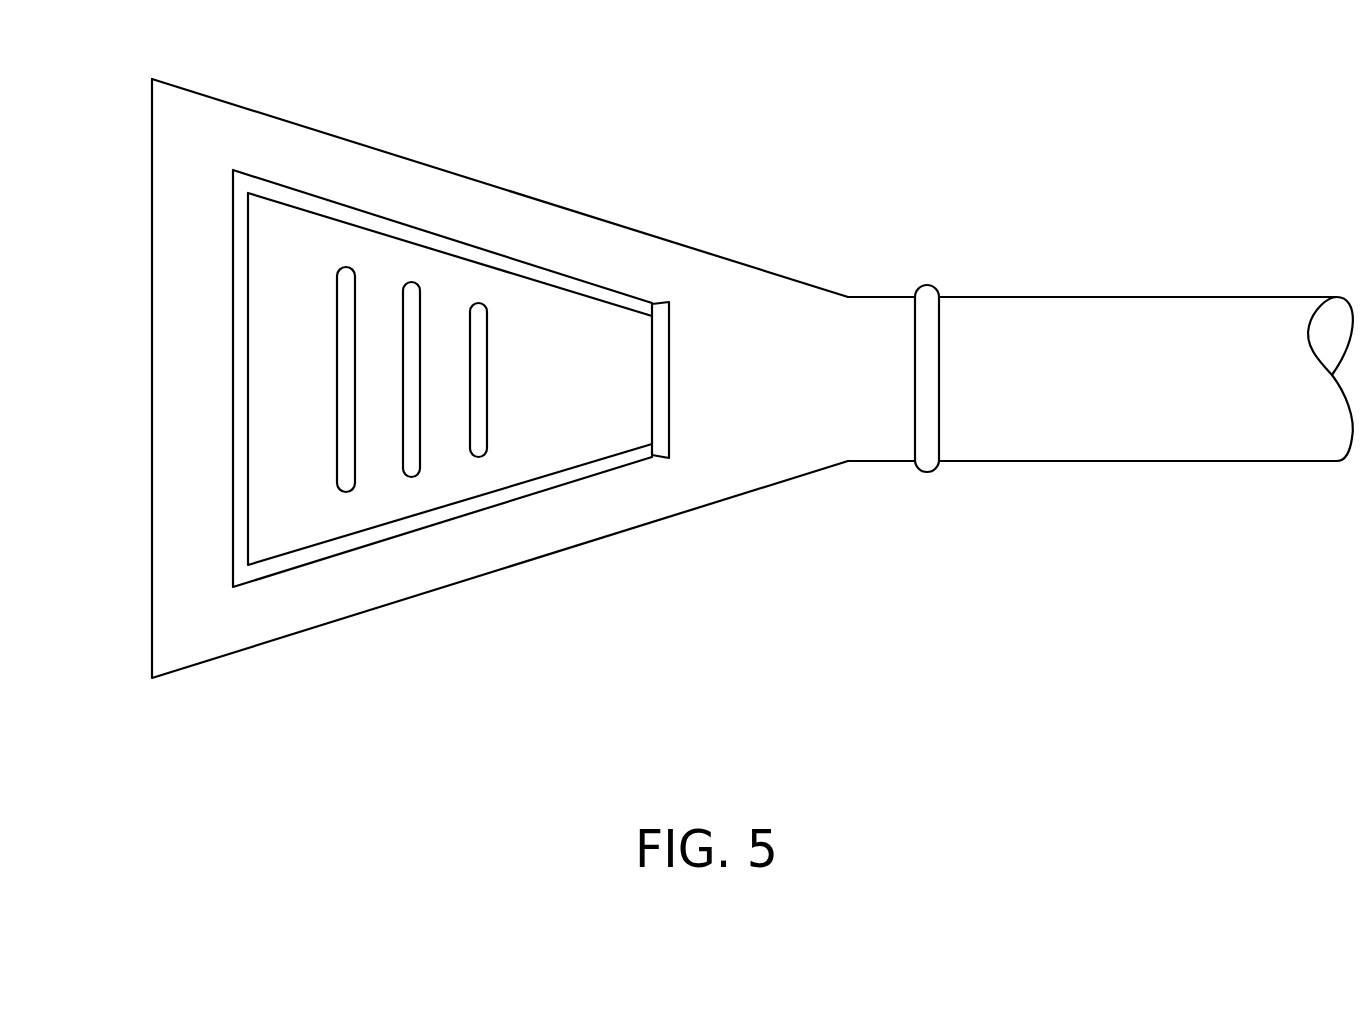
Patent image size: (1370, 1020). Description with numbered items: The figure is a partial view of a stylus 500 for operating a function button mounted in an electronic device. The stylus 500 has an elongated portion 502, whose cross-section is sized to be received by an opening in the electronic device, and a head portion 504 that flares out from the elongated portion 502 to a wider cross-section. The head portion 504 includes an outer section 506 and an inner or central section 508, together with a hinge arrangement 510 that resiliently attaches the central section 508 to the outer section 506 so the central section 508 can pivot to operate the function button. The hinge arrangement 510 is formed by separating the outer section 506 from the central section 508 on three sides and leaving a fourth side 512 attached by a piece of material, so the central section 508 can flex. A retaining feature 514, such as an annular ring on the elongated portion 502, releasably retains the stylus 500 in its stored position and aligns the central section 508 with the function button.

The stylus 500 is at (752, 378).
The elongated portion 502 is at (1175, 297).
The head portion 504 is at (500, 378).
The outer section 506 is at (408, 158).
The central section 508 is at (450, 278).
The hinge arrangement 510 is at (660, 303).
The fourth side 512 is at (652, 390).
The retaining feature 514 is at (926, 473).